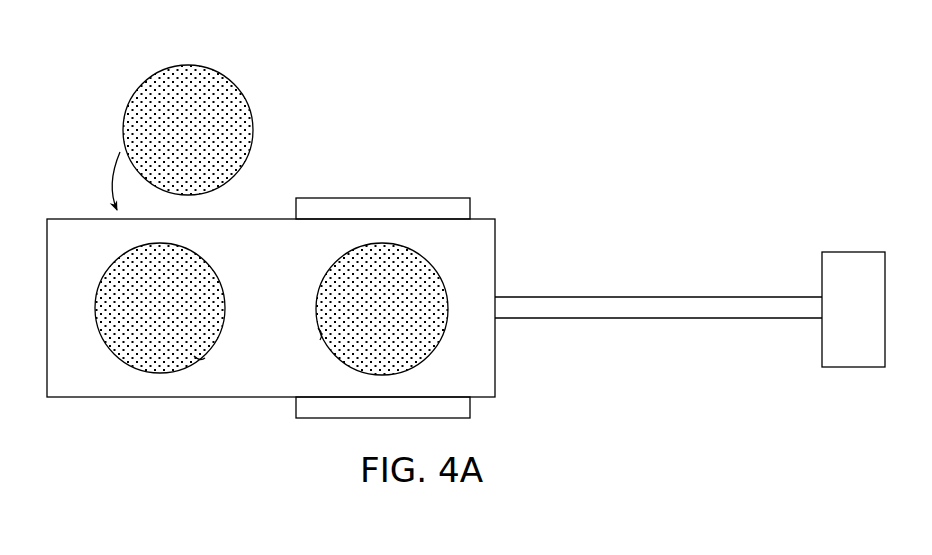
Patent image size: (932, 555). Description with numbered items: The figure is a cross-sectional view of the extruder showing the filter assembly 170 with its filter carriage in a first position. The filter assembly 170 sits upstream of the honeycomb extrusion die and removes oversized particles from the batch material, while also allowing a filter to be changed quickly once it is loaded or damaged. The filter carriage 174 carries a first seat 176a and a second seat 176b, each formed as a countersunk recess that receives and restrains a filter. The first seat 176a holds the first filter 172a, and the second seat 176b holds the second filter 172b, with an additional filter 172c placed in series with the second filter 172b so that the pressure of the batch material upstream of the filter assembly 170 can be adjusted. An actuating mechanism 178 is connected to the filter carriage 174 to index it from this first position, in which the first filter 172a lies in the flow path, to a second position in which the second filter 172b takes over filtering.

The filter assembly 170 is at (504, 187).
The first filter 172a is at (317, 297).
The second filter 172b is at (210, 264).
The additional filter 172c is at (248, 104).
The filter carriage 174 is at (497, 243).
The first seat 176a is at (318, 338).
The second seat 176b is at (203, 359).
The actuating mechanism 178 is at (853, 252).